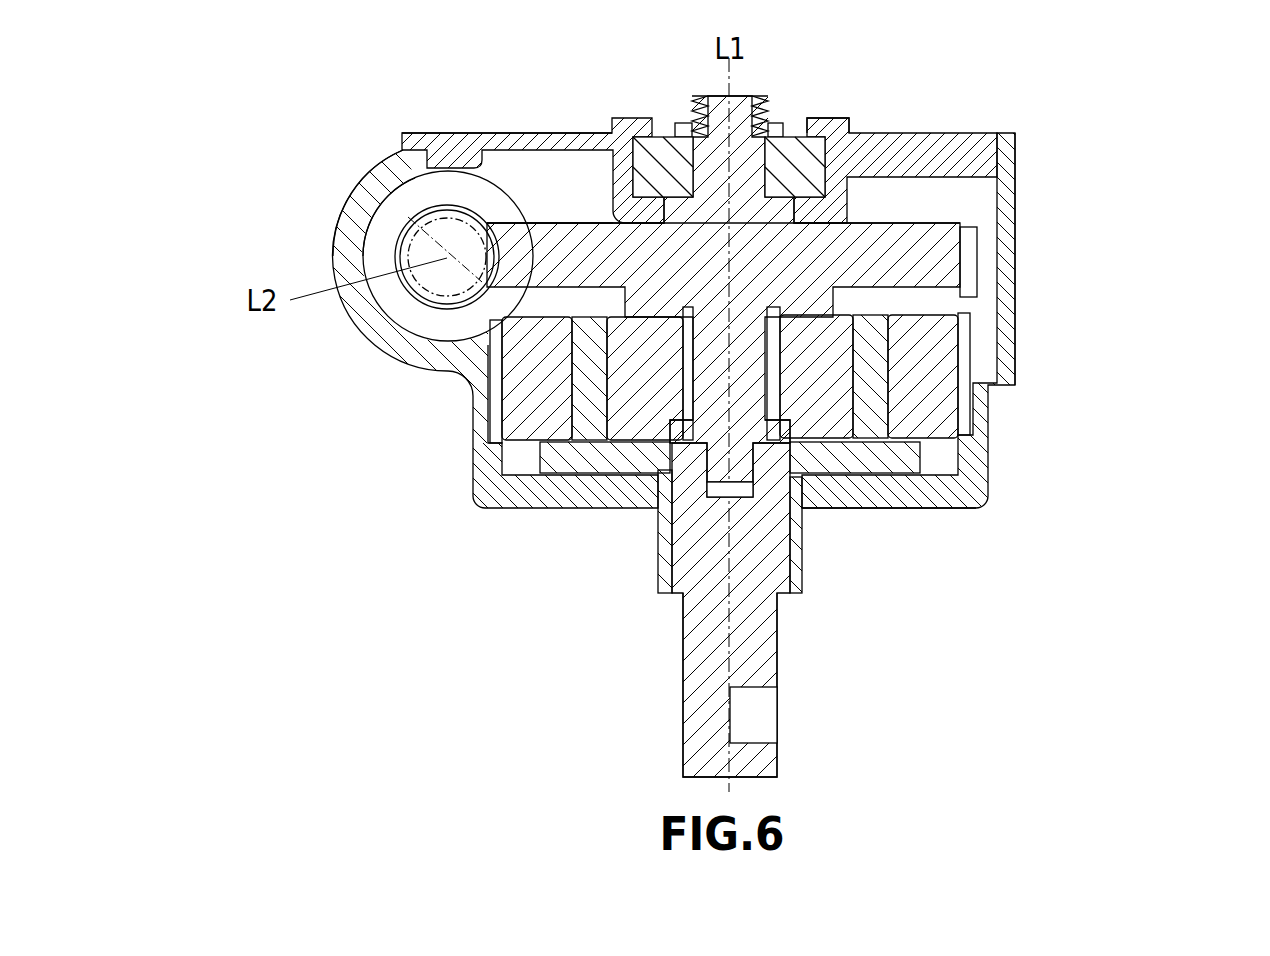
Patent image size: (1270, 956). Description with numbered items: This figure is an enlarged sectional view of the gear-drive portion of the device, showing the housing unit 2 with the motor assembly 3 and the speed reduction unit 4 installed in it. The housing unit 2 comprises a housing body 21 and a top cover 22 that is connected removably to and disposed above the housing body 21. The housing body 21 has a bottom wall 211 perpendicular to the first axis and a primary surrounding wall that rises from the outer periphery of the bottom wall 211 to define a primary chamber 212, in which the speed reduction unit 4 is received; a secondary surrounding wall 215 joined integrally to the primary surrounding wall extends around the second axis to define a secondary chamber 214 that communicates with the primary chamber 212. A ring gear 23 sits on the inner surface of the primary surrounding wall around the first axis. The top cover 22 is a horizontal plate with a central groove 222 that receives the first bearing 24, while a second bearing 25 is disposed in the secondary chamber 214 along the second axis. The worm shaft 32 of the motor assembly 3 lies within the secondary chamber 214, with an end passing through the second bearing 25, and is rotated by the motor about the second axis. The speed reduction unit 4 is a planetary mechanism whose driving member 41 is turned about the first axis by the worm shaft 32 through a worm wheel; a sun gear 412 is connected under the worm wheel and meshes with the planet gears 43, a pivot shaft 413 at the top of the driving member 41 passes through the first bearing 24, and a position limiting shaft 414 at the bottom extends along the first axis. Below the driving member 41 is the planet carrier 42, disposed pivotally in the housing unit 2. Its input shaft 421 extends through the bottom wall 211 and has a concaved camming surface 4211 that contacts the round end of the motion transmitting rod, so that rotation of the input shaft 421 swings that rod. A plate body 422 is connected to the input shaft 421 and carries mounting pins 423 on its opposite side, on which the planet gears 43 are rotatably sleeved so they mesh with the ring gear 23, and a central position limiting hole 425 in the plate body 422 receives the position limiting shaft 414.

The housing unit 2 is at (1048, 241).
The housing body 21 is at (1010, 290).
The bottom wall 211 is at (942, 508).
The primary chamber 212 is at (980, 200).
The top cover 22 is at (986, 130).
The groove 222 is at (870, 130).
The ring gear 23 is at (490, 403).
The first bearing 24 is at (790, 165).
The second bearing 25 is at (373, 257).
The motor assembly 3 is at (398, 198).
The worm shaft 32 is at (427, 212).
The secondary chamber 214 is at (360, 204).
The secondary surrounding wall 215 is at (354, 179).
The speed reduction unit 4 is at (540, 205).
The driving member 41 is at (583, 240).
The sun gear 412 is at (547, 450).
The pivot shaft 413 is at (700, 160).
The position limiting shaft 414 is at (672, 468).
The planet carrier 42 is at (847, 482).
The input shaft 421 is at (775, 655).
The concaved camming surface 4211 is at (777, 720).
The plate body 422 is at (730, 531).
The mounting pins 423 is at (878, 397).
The position limiting hole 425 is at (705, 492).
The planet gears 43 is at (945, 352).